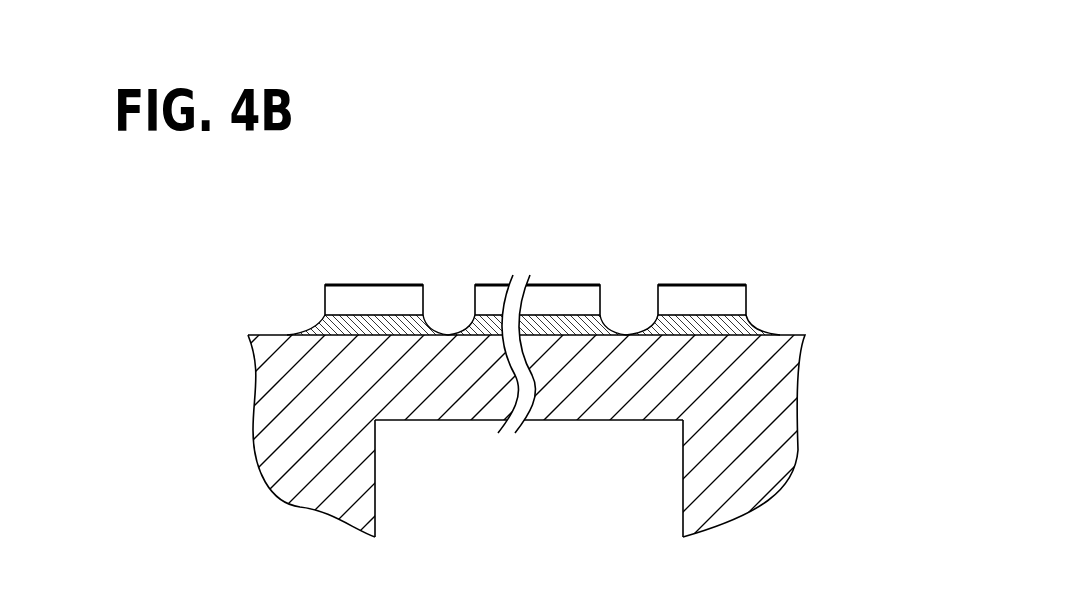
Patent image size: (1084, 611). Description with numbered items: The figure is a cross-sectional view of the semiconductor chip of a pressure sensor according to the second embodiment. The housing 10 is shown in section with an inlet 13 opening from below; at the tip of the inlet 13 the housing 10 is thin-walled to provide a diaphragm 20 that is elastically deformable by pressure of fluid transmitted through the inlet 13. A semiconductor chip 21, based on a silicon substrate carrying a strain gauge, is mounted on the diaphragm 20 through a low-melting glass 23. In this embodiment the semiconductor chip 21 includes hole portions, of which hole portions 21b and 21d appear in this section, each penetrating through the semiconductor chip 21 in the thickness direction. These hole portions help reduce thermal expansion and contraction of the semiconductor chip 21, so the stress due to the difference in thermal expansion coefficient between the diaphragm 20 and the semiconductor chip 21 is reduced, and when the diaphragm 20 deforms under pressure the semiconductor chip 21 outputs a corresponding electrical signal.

The housing 10 is at (780, 398).
The inlet 13 is at (375, 465).
The diaphragm 20 is at (600, 390).
The semiconductor chip 21 is at (746, 285).
The hole portion 21b is at (602, 299).
The hole portion 21d is at (424, 299).
The low-melting glass 23 is at (757, 323).